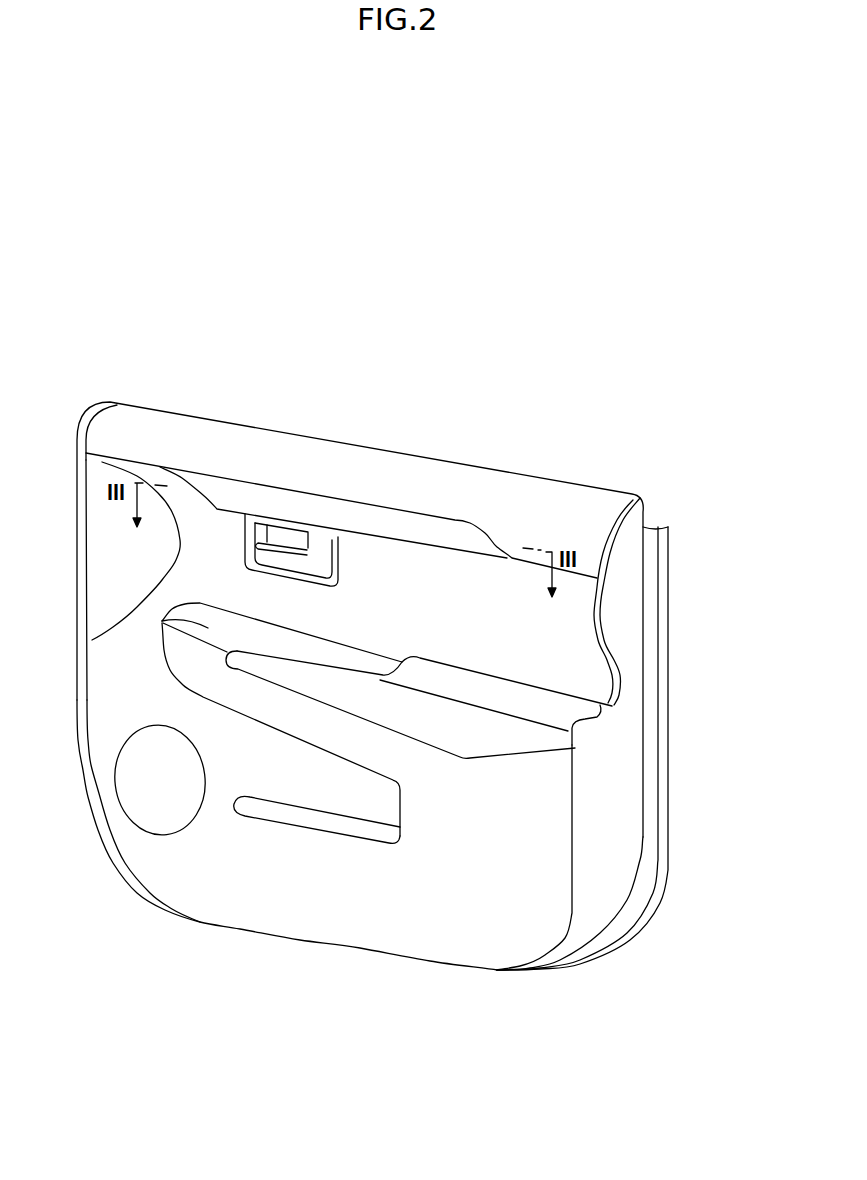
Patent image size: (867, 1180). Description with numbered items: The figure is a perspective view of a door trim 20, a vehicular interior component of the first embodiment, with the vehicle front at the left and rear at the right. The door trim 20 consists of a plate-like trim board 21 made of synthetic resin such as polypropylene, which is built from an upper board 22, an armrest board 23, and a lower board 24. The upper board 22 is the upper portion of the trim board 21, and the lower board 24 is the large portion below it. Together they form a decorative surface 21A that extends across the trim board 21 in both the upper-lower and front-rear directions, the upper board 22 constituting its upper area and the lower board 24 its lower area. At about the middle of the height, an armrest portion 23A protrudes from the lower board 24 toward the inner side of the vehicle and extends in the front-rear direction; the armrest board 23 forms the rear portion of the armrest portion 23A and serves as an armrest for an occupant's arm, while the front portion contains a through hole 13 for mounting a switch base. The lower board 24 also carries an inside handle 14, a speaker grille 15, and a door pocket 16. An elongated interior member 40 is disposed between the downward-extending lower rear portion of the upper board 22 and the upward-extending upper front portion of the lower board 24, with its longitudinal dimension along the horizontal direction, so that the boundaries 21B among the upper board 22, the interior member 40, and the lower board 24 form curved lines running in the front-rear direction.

The through hole 13 is at (212, 620).
The inside handle 14 is at (247, 556).
The speaker grille 15 is at (157, 798).
The door pocket 16 is at (307, 822).
The door trim 20 is at (473, 440).
The trim board 21 is at (740, 817).
The decorative surface 21A is at (385, 577).
The boundaries 21B is at (515, 553).
The upper board 22 is at (583, 543).
The armrest board 23 is at (553, 707).
The armrest portion 23A is at (470, 693).
The lower board 24 is at (517, 808).
The interior member 40 is at (283, 510).